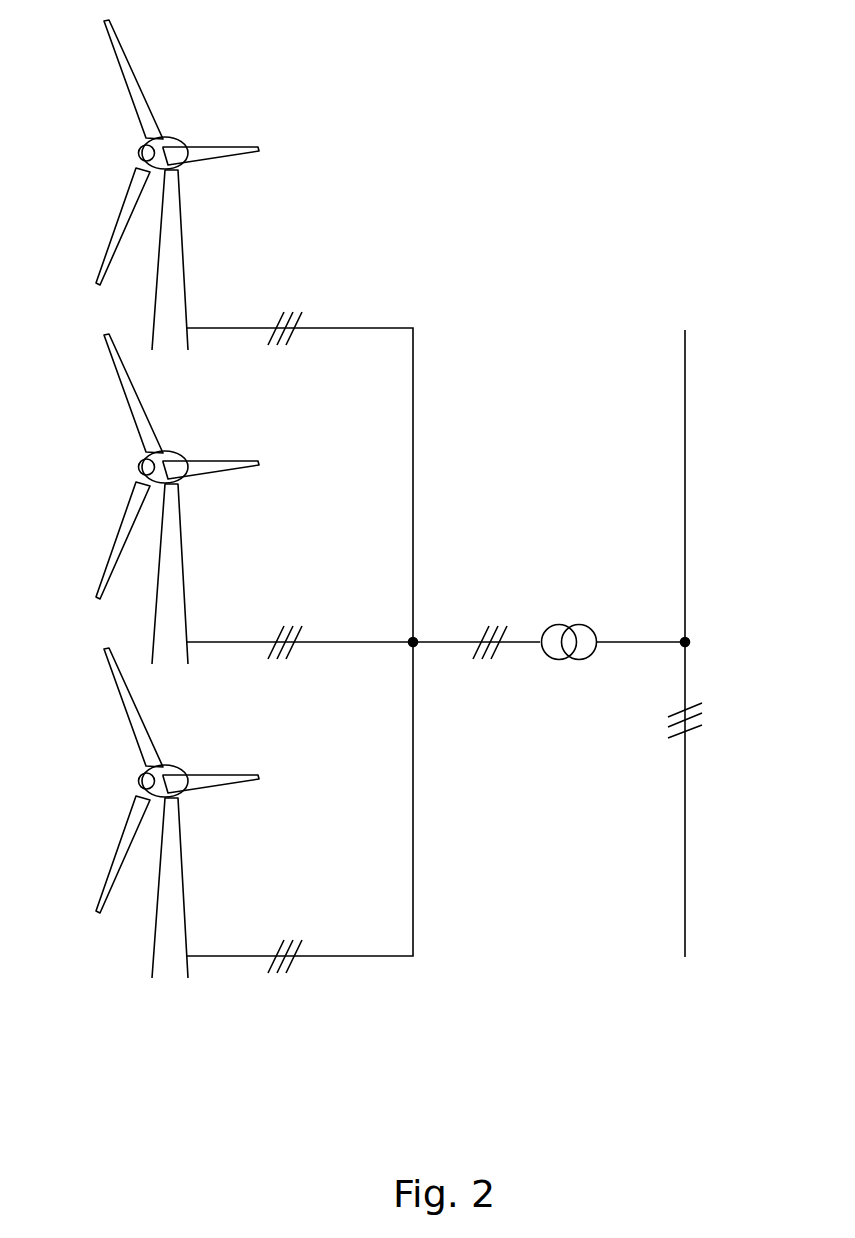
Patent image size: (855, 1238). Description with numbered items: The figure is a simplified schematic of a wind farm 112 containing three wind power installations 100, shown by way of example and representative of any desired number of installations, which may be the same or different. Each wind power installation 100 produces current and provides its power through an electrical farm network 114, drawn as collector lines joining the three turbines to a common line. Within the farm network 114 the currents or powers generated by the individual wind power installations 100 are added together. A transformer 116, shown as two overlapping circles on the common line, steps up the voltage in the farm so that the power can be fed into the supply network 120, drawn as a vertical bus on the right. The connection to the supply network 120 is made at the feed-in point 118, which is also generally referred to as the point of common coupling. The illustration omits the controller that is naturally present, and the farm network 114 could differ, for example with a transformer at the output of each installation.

The wind power installation 100 is at (175, 243).
The wind farm 112 is at (489, 151).
The electrical farm network 114 is at (435, 642).
The transformer 116 is at (574, 614).
The feed-in point 118 is at (698, 623).
The supply network 120 is at (686, 360).